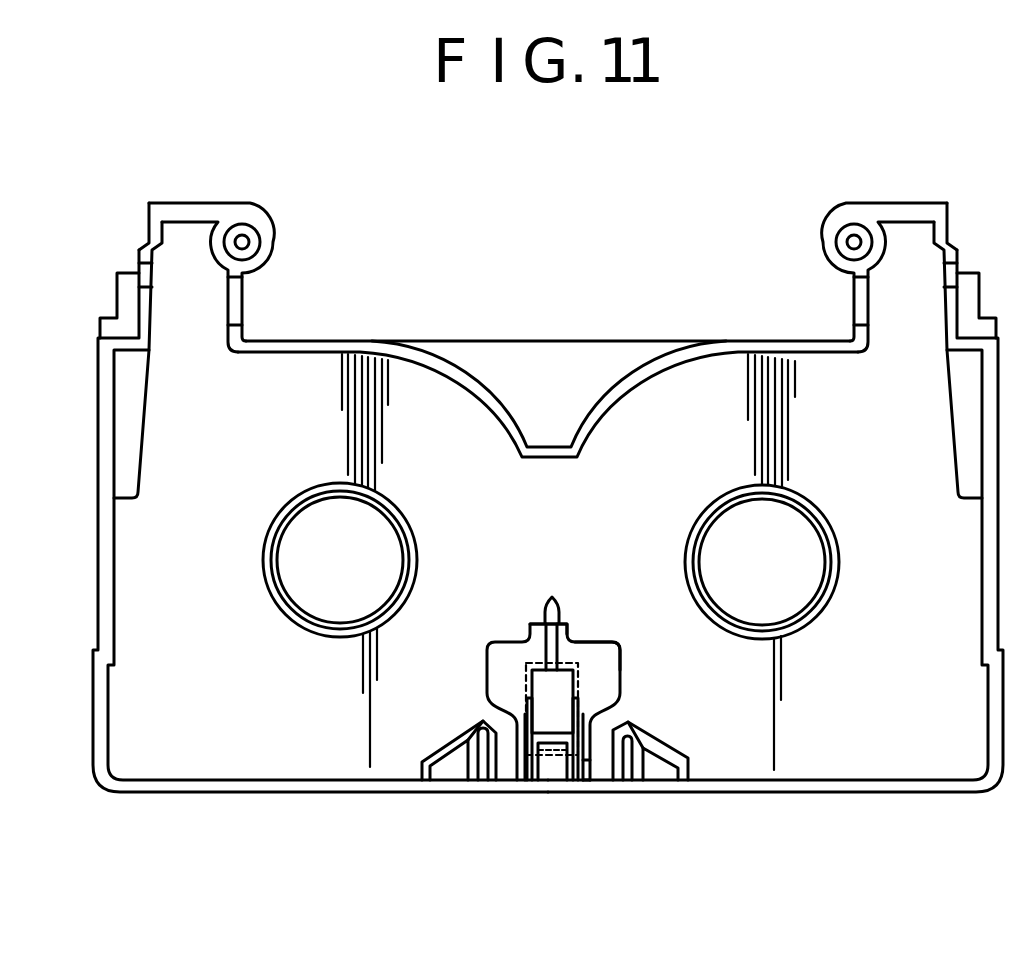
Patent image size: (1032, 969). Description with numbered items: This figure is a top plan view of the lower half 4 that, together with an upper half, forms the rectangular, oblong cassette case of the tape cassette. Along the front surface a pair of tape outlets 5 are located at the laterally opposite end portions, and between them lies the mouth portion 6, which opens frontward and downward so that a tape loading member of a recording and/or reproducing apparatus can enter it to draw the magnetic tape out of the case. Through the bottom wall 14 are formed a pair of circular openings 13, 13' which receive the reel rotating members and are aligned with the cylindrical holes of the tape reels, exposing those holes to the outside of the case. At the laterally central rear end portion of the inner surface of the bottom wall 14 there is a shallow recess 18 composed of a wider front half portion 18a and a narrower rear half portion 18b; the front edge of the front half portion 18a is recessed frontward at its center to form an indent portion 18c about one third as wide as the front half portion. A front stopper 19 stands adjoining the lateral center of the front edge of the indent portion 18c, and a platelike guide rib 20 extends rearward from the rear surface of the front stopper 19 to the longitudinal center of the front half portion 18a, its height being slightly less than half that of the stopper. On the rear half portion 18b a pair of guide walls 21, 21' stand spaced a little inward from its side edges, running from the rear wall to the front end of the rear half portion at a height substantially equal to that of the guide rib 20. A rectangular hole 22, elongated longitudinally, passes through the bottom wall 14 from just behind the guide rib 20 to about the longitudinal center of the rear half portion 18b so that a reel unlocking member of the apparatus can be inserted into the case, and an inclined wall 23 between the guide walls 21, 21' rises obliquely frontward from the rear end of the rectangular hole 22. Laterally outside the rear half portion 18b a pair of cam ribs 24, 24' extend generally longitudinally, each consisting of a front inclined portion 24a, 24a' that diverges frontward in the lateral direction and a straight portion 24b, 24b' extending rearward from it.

The lower half 4 is at (940, 170).
The tape outlet 5 is at (192, 232).
The mouth portion 6 is at (300, 350).
The circular opening 13 is at (340, 573).
The circular opening 13' is at (776, 574).
The bottom wall 14 is at (707, 390).
The shallow recess 18 is at (617, 670).
The front half portion 18a is at (609, 642).
The rear half portion 18b is at (597, 782).
The indent portion 18c is at (568, 632).
The front stopper 19 is at (551, 598).
The guide rib 20 is at (547, 642).
The guide wall 21 is at (522, 773).
The guide wall 21' is at (576, 773).
The rectangular hole 22 is at (527, 686).
The inclined wall 23 is at (550, 733).
The cam rib 24 is at (459, 784).
The front inclined portion 24a is at (448, 707).
The straight portion 24b is at (457, 746).
The cam rib 24' is at (656, 785).
The front inclined portion 24a' is at (683, 719).
The straight portion 24b' is at (682, 750).